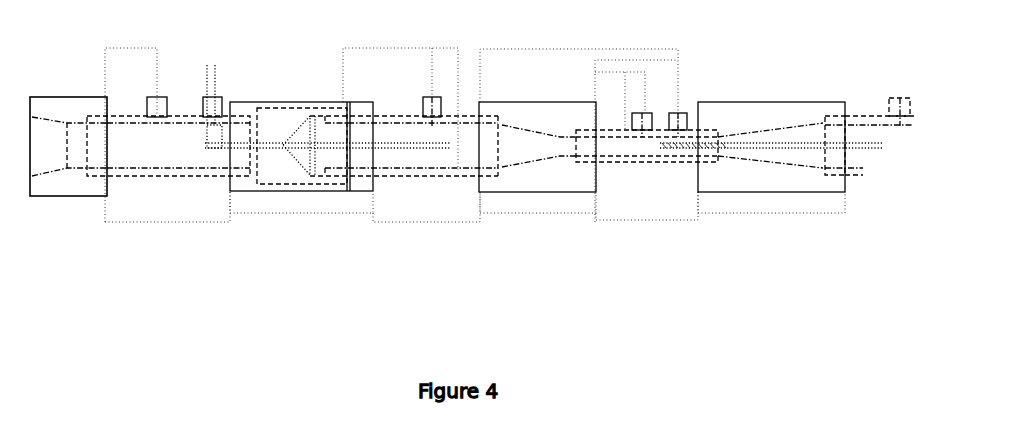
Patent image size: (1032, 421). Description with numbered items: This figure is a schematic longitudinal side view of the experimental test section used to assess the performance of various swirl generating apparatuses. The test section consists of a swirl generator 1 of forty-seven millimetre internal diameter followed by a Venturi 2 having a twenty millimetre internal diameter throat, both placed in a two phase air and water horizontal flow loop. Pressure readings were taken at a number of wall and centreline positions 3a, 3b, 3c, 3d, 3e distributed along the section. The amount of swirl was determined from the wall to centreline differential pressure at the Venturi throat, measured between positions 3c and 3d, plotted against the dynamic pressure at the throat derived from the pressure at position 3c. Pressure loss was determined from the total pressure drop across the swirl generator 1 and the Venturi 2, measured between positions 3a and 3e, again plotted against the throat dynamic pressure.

The swirl generator 1 is at (495, 235).
The Venturi 2 is at (495, 235).
The pressure reading position 3a is at (157, 112).
The pressure reading position 3b is at (642, 136).
The pressure reading position 3c is at (678, 145).
The pressure reading position 3d is at (677, 147).
The pressure reading position 3e is at (900, 110).